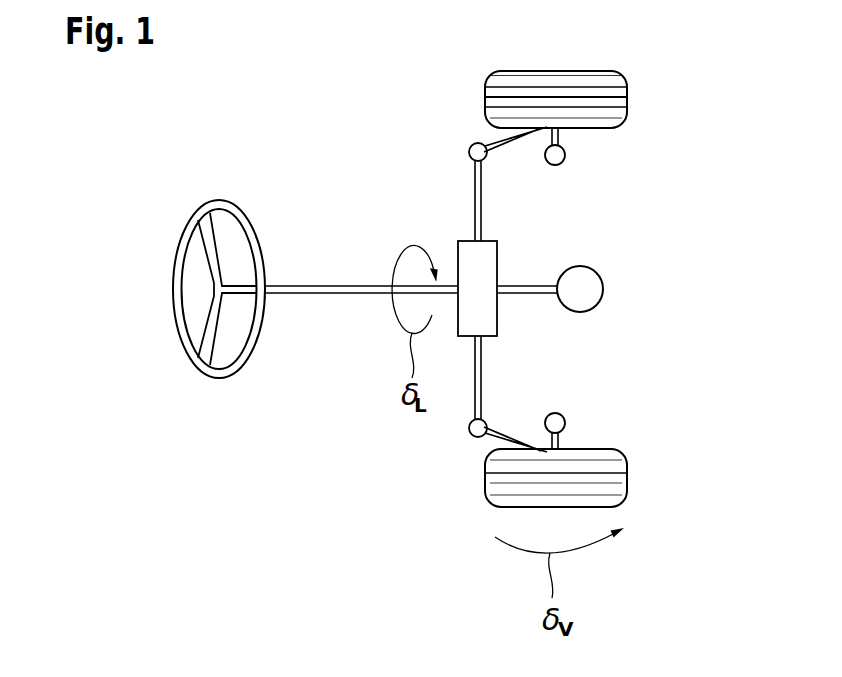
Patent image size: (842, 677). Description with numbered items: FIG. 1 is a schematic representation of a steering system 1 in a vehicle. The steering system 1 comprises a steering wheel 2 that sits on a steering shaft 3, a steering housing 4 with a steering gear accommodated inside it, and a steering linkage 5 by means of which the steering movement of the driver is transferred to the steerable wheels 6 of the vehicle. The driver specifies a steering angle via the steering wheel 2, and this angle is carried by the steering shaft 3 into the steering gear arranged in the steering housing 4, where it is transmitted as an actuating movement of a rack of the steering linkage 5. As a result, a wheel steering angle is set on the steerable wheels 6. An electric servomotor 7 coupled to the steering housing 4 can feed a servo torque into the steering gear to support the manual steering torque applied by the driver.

The steering system 1 is at (282, 132).
The steering wheel 2 is at (173, 288).
The steering shaft 3 is at (320, 286).
The steering housing 4 is at (497, 249).
The steering linkage 5 is at (475, 196).
The steerable wheels 6 is at (590, 82).
The electric servomotor 7 is at (603, 290).